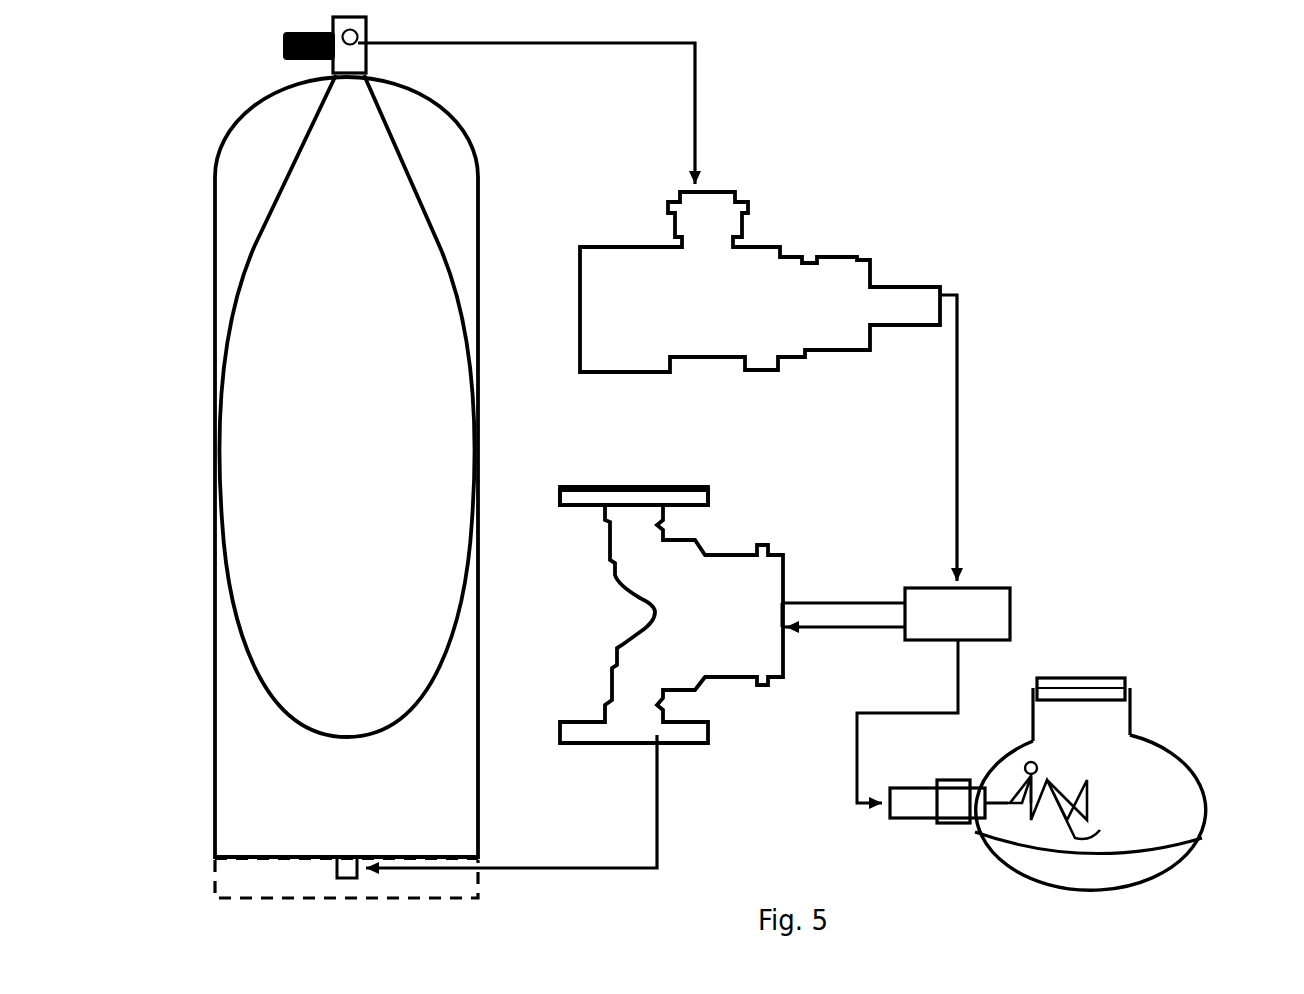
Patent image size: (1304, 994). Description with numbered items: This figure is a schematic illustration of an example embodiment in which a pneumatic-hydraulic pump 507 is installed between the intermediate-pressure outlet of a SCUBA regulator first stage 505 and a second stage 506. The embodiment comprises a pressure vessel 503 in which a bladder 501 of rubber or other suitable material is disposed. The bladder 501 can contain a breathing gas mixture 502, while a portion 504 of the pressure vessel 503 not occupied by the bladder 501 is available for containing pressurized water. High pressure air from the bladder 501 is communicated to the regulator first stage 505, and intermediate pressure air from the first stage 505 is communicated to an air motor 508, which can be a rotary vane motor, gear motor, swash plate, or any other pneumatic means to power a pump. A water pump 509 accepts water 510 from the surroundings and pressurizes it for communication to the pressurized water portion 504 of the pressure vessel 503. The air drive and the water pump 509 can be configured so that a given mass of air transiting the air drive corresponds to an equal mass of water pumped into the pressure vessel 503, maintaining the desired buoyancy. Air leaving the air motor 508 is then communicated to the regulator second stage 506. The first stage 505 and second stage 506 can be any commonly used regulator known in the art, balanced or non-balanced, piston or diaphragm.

The bladder 501 is at (257, 240).
The breathing gas mixture 502 is at (369, 362).
The pressure vessel 503 is at (215, 125).
The portion of the pressure vessel 504 is at (374, 817).
The SCUBA regulator first stage 505 is at (840, 160).
The second stage 506 is at (1157, 720).
The pneumatic-hydraulic pump 507 is at (1008, 508).
The air motor 508 is at (977, 626).
The water pump 509 is at (780, 492).
The water 510 is at (653, 482).